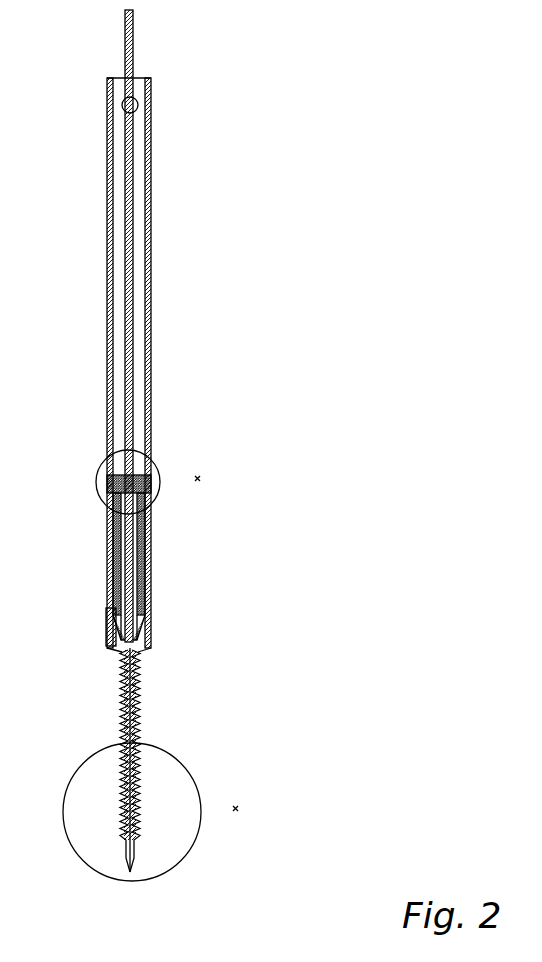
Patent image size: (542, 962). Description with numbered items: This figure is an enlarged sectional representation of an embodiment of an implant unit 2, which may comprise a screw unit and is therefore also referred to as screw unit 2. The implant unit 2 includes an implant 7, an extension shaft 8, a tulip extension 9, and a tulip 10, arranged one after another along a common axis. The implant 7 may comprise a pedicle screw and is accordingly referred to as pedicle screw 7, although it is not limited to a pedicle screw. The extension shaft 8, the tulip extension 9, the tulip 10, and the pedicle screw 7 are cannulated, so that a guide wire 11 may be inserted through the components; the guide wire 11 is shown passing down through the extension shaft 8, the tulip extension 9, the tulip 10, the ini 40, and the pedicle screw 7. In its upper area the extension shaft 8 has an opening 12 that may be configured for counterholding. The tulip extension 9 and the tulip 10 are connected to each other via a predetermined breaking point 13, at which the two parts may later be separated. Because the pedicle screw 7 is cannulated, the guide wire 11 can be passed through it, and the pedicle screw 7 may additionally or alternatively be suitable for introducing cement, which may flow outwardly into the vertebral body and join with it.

The implant unit 2 is at (74, 285).
The implant 7 is at (143, 657).
The extension shaft 8 is at (151, 302).
The tulip extension 9 is at (150, 535).
The tulip 10 is at (150, 625).
The guide wire 11 is at (133, 42).
The opening 12 is at (150, 103).
The predetermined breaking point 13 is at (150, 590).
The ini 40 is at (155, 468).